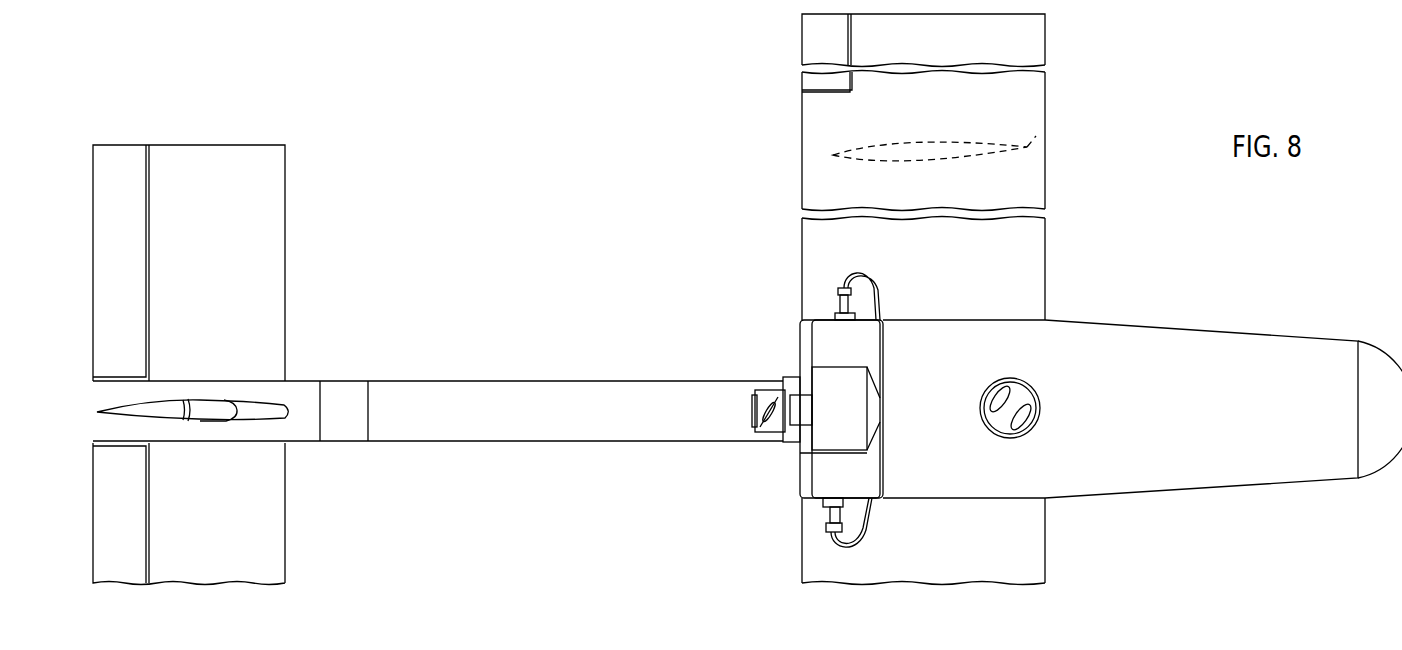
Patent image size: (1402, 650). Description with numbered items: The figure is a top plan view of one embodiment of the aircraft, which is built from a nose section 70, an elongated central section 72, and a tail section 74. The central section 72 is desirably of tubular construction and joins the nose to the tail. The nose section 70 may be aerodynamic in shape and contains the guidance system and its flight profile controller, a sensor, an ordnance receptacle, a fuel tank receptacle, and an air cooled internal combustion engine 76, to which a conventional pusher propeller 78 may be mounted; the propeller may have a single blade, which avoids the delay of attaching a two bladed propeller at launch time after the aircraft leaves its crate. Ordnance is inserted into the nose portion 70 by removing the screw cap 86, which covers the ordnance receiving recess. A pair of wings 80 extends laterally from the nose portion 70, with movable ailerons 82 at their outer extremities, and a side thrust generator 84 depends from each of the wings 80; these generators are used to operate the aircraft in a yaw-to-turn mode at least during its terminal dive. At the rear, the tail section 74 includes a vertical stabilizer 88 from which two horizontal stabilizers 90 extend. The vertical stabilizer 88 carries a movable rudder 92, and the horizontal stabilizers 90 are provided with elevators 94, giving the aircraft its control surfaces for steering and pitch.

The nose section 70 is at (1258, 339).
The elongated central section 72 is at (514, 380).
The tail section 74 is at (302, 382).
The air cooled internal combustion engine 76 is at (872, 348).
The pusher propeller 78 is at (775, 412).
The wings 80 is at (1028, 245).
The movable ailerons 82 is at (802, 51).
The side thrust generator 84 is at (1050, 130).
The screw cap 86 is at (1036, 393).
The vertical stabilizer 88 is at (248, 398).
The horizontal stabilizers 90 is at (278, 216).
The movable rudder 92 is at (184, 398).
The elevators 94 is at (138, 232).